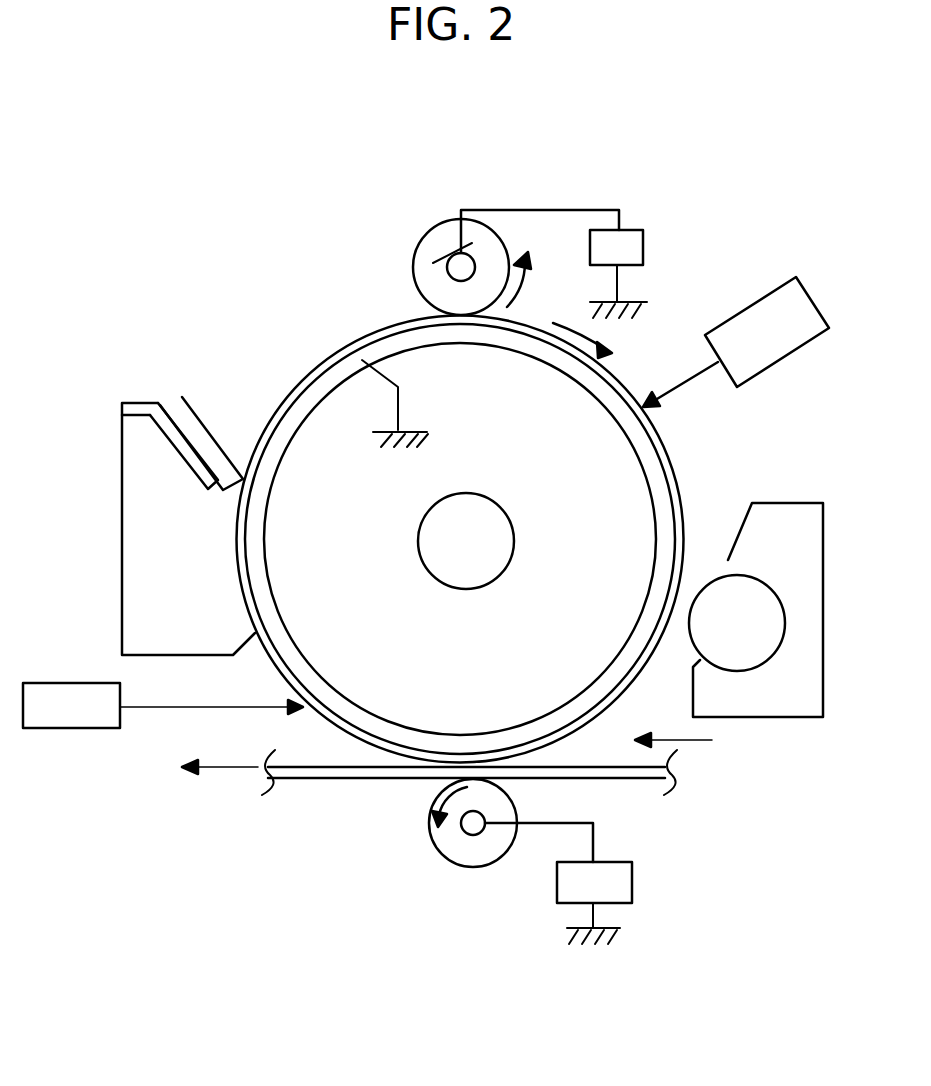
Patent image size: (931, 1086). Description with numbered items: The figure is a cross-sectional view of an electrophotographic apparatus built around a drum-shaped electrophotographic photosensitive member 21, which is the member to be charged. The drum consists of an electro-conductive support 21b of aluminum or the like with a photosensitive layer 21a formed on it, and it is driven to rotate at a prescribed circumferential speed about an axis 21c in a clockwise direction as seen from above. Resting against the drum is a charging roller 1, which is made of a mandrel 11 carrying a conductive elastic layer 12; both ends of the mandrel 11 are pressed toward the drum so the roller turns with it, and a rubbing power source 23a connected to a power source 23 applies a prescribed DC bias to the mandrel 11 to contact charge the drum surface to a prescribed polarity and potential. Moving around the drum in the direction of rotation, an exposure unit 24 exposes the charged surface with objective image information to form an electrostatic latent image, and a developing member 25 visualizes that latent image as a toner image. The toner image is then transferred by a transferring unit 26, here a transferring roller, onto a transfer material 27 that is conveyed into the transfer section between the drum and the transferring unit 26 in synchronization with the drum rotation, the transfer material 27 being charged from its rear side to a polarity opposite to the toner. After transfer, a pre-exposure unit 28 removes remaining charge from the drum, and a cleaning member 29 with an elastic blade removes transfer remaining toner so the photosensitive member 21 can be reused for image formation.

The charging roller 1 is at (419, 267).
The mandrel 11 is at (462, 270).
The conductive elastic layer 12 is at (437, 245).
The electrophotographic photosensitive member 21 is at (428, 538).
The photosensitive layer 21a is at (325, 365).
The electro-conductive support 21b is at (315, 393).
The axis 21c is at (470, 578).
The power source 23 is at (618, 274).
The rubbing power source 23a is at (461, 250).
The exposure unit 24 is at (736, 342).
The developing member 25 is at (795, 520).
The transferring unit 26 is at (437, 840).
The transfer material 27 is at (297, 778).
The pre-exposure unit 28 is at (163, 705).
The cleaning member 29 is at (137, 538).